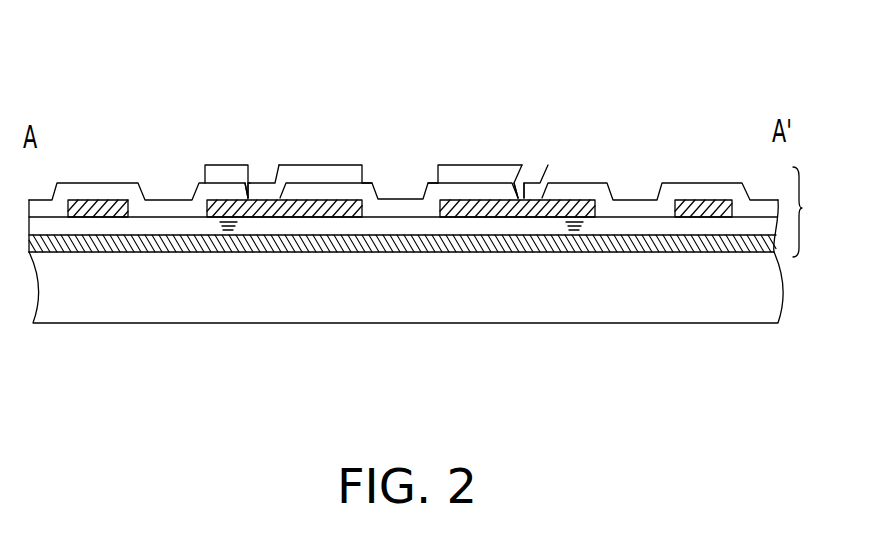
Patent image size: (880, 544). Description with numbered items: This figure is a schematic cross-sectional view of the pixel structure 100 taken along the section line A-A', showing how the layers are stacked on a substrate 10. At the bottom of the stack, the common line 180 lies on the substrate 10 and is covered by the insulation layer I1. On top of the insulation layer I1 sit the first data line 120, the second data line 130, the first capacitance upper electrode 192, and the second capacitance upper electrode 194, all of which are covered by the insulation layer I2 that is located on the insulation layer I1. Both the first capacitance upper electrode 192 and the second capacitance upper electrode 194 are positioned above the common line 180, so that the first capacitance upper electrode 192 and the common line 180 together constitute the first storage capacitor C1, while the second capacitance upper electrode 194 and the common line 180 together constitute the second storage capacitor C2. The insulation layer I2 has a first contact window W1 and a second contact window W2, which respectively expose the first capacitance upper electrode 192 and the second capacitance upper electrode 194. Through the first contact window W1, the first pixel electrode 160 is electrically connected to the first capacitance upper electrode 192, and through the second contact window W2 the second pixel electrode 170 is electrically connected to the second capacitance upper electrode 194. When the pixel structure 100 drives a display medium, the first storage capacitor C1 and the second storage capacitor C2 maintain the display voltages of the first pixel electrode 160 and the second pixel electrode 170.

The substrate 10 is at (760, 313).
The pixel structure 100 is at (438, 212).
The first data line 120 is at (95, 205).
The second data line 130 is at (709, 205).
The first pixel electrode 160 is at (317, 173).
The second pixel electrode 170 is at (473, 173).
The common line 180 is at (392, 243).
The first capacitance upper electrode 192 is at (277, 217).
The second capacitance upper electrode 194 is at (512, 217).
The insulation layer I1 is at (348, 227).
The insulation layer I2 is at (160, 210).
The first storage capacitor C1 is at (237, 223).
The second storage capacitor C2 is at (581, 224).
The first contact window W1 is at (248, 188).
The second contact window W2 is at (518, 190).